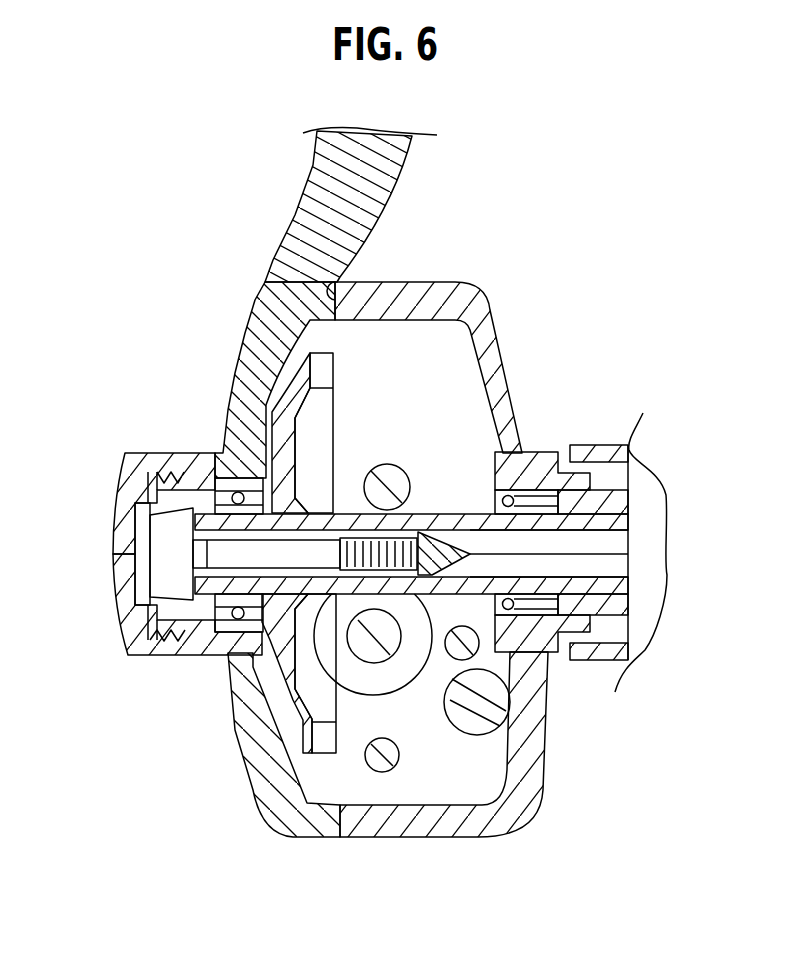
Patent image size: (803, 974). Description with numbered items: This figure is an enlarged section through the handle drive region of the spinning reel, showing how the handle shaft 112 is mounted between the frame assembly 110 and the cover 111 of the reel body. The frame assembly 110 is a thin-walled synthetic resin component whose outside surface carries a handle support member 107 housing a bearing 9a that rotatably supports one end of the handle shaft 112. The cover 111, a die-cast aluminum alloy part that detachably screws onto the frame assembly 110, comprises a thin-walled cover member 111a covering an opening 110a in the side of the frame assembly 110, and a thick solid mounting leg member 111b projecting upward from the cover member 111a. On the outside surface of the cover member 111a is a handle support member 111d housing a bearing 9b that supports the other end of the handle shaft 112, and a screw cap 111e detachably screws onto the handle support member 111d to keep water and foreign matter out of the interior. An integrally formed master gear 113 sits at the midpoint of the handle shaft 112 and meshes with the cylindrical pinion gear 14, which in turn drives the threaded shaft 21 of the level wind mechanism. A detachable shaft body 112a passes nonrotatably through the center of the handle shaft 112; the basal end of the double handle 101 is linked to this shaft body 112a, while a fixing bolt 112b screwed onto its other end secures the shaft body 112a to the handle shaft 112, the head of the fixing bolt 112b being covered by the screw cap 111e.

The double handle 101 is at (648, 497).
The handle support member 107 is at (540, 458).
The frame assembly 110 is at (497, 332).
The opening 110a is at (326, 288).
The cover 111 is at (203, 312).
The cover member 111a is at (228, 398).
The mounting leg member 111b is at (309, 160).
The handle support member 111d is at (218, 458).
The screw cap 111e is at (128, 635).
The handle shaft 112 is at (437, 537).
The shaft body 112a is at (577, 563).
The fixing bolt 112b is at (218, 562).
The master gear 113 is at (274, 726).
The pinion gear 14 is at (362, 683).
The threaded shaft 21 is at (470, 729).
The bearing 9a is at (500, 492).
The bearing 9b is at (238, 620).